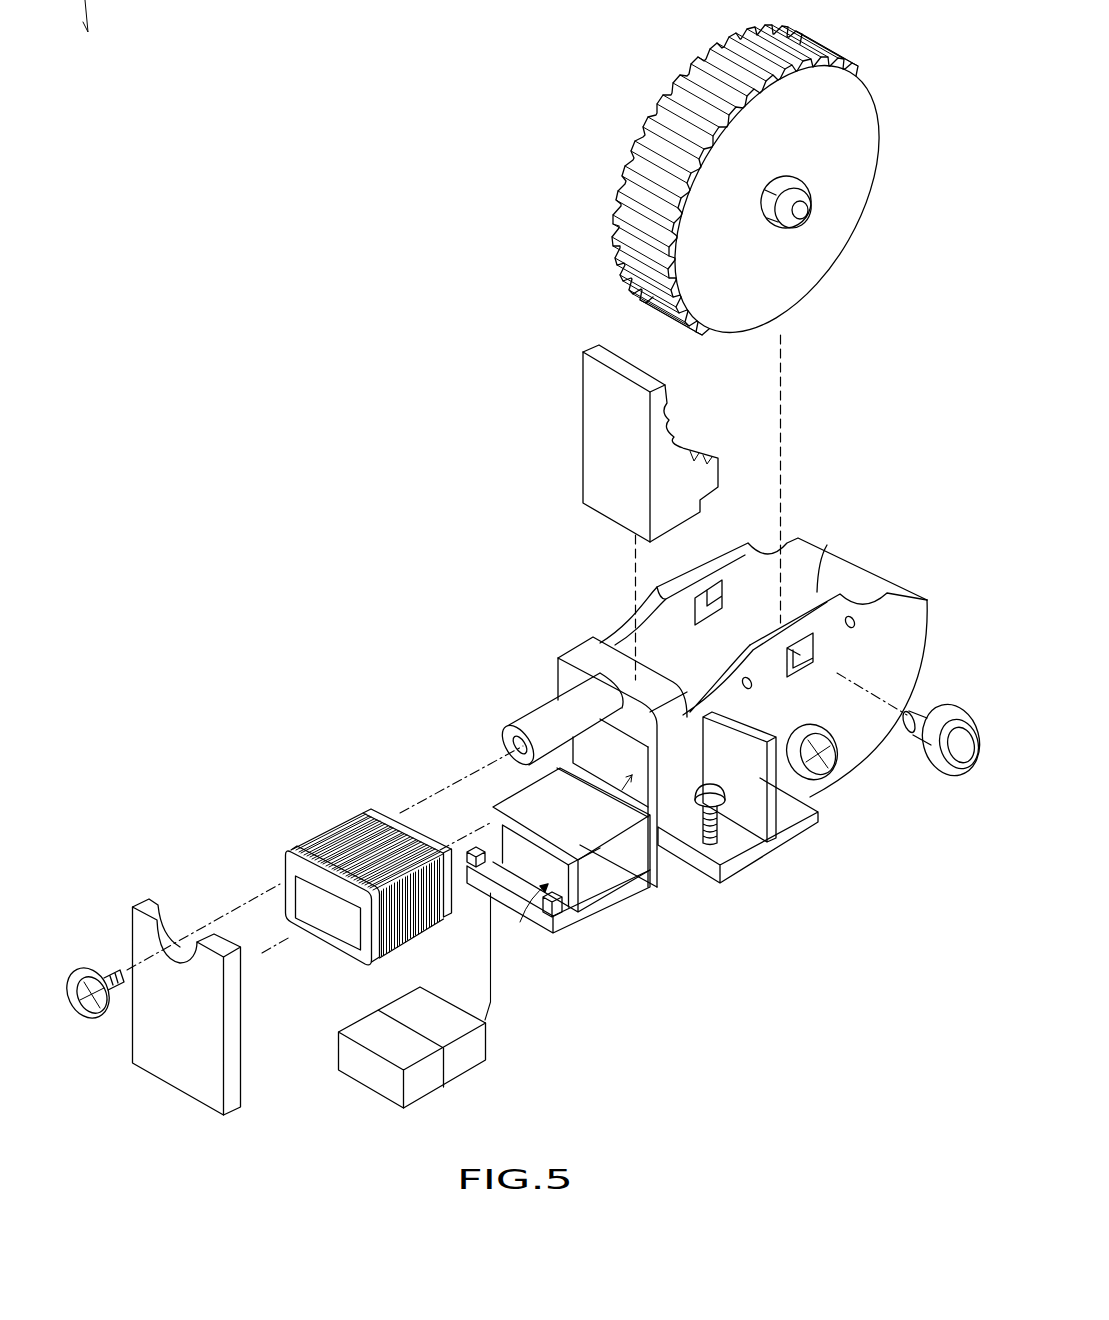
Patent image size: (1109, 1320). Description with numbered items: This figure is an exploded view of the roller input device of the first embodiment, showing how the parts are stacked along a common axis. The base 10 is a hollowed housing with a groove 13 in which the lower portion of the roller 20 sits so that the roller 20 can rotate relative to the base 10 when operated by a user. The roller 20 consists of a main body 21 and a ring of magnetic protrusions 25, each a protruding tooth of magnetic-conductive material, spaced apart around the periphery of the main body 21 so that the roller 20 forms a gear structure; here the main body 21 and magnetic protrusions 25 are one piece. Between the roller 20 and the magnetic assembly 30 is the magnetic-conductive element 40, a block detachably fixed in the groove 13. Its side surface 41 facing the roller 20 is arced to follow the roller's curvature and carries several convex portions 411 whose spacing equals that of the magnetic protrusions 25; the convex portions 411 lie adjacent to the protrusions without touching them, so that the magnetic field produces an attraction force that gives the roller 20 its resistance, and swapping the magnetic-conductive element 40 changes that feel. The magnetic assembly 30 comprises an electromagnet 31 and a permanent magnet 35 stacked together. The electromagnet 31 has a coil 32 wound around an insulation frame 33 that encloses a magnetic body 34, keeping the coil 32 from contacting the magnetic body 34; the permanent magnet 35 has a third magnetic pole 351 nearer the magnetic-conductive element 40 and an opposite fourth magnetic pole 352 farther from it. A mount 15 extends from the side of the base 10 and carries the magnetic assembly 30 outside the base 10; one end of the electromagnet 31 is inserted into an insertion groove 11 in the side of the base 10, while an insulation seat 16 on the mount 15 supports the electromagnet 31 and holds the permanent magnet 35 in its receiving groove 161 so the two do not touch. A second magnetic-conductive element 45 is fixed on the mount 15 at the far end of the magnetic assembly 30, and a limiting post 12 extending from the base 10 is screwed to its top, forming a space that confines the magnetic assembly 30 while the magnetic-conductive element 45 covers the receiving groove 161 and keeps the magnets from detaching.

The base 10 is at (727, 761).
The insertion groove 11 is at (630, 780).
The limiting post 12 is at (530, 722).
The groove 13 is at (863, 578).
The mount 15 is at (568, 920).
The insulation seat 16 is at (593, 833).
The receiving groove 161 is at (527, 920).
The roller 20 is at (800, 188).
The main body 21 is at (789, 199).
The magnetic protrusions 25 is at (813, 43).
The magnetic assembly 30 is at (419, 943).
The electromagnet 31 is at (377, 962).
The coil 32 is at (345, 823).
The insulation frame 33 is at (392, 817).
The magnetic body 34 is at (322, 897).
The permanent magnet 35 is at (440, 1069).
The third magnetic pole 351 is at (488, 1042).
The fourth magnetic pole 352 is at (370, 1078).
The magnetic-conductive element 40 is at (650, 443).
The side surface 41 is at (712, 458).
The convex portions 411 is at (675, 425).
The magnetic-conductive element 45 is at (152, 902).